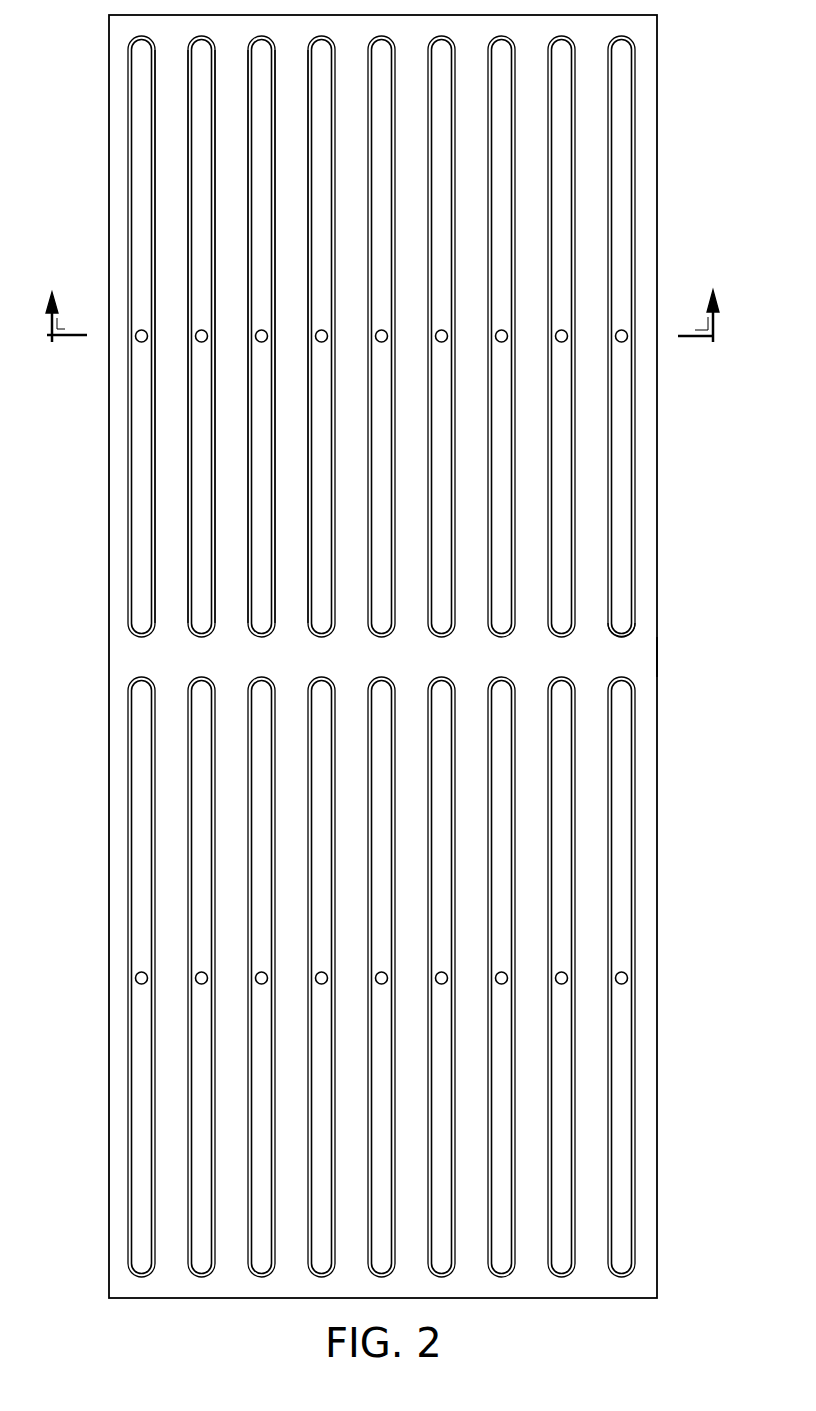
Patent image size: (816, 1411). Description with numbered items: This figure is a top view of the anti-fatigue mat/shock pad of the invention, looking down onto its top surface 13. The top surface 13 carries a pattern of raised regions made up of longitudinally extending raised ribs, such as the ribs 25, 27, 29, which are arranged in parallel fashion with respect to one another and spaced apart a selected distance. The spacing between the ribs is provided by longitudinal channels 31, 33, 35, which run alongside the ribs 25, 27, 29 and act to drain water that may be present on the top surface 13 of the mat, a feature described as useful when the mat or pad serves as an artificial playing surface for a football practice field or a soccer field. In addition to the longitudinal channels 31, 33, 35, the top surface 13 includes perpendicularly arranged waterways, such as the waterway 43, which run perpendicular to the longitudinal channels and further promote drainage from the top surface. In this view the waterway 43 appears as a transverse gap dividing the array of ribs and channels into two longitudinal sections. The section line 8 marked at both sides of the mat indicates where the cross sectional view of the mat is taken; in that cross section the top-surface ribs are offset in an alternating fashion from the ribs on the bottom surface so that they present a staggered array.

The top surface 13 is at (647, 752).
The raised rib 25 is at (140, 72).
The raised rib 27 is at (202, 128).
The raised rib 29 is at (263, 188).
The longitudinal channel 31 is at (173, 410).
The longitudinal channel 33 is at (232, 488).
The longitudinal channel 35 is at (293, 573).
The waterway 43 is at (595, 655).
The section line 8- 8 is at (383, 302).